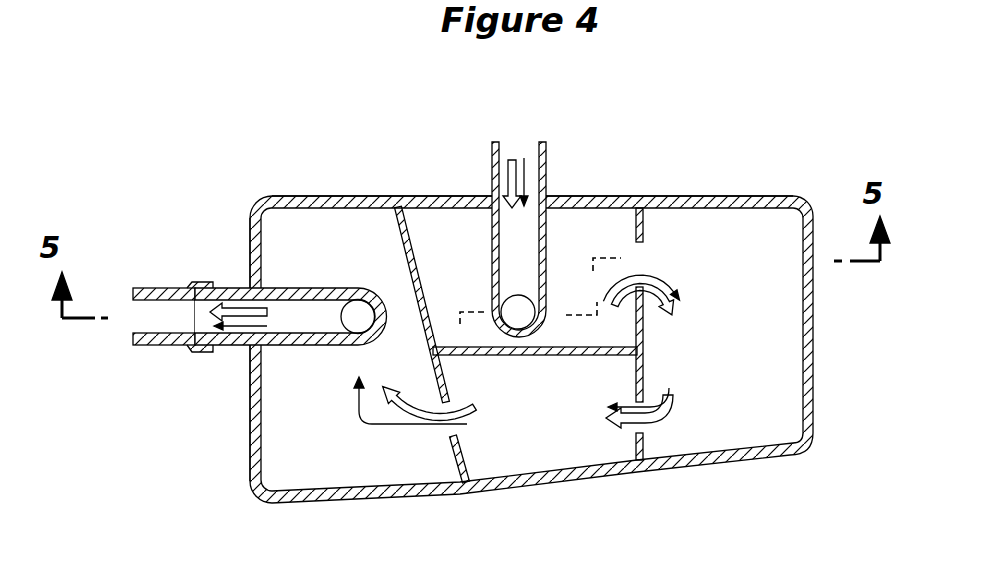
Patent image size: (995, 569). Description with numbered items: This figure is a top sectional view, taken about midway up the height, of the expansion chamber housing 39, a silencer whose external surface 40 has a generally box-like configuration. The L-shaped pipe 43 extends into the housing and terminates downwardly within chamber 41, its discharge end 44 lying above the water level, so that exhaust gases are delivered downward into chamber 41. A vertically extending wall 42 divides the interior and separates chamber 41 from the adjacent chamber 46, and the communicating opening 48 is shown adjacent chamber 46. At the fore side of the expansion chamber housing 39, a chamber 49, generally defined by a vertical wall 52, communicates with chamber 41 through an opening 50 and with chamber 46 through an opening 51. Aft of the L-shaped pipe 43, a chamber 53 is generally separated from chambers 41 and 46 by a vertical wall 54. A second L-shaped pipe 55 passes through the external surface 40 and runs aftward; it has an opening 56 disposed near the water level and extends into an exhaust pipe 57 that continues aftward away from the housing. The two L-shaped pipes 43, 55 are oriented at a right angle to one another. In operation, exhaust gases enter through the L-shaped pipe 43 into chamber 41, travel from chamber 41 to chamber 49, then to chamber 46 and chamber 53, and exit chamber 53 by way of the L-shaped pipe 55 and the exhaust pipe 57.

The expansion chamber housing 39 is at (712, 194).
The external surface 40 is at (303, 194).
The chamber 41 is at (590, 244).
The vertically extending wall 42 is at (248, 373).
The L-shaped pipe 43 is at (547, 168).
The discharge end 44 is at (521, 318).
The chamber 46 is at (528, 434).
The communicating opening 48 is at (452, 436).
The chamber 49 is at (725, 307).
The opening 50 is at (640, 243).
The opening 51 is at (642, 431).
The vertical wall 52 is at (643, 320).
The chamber 53 is at (280, 422).
The vertical wall 54 is at (397, 226).
The second L-shaped pipe 55 is at (230, 285).
The opening 56 is at (357, 306).
The exhaust pipe 57 is at (167, 342).